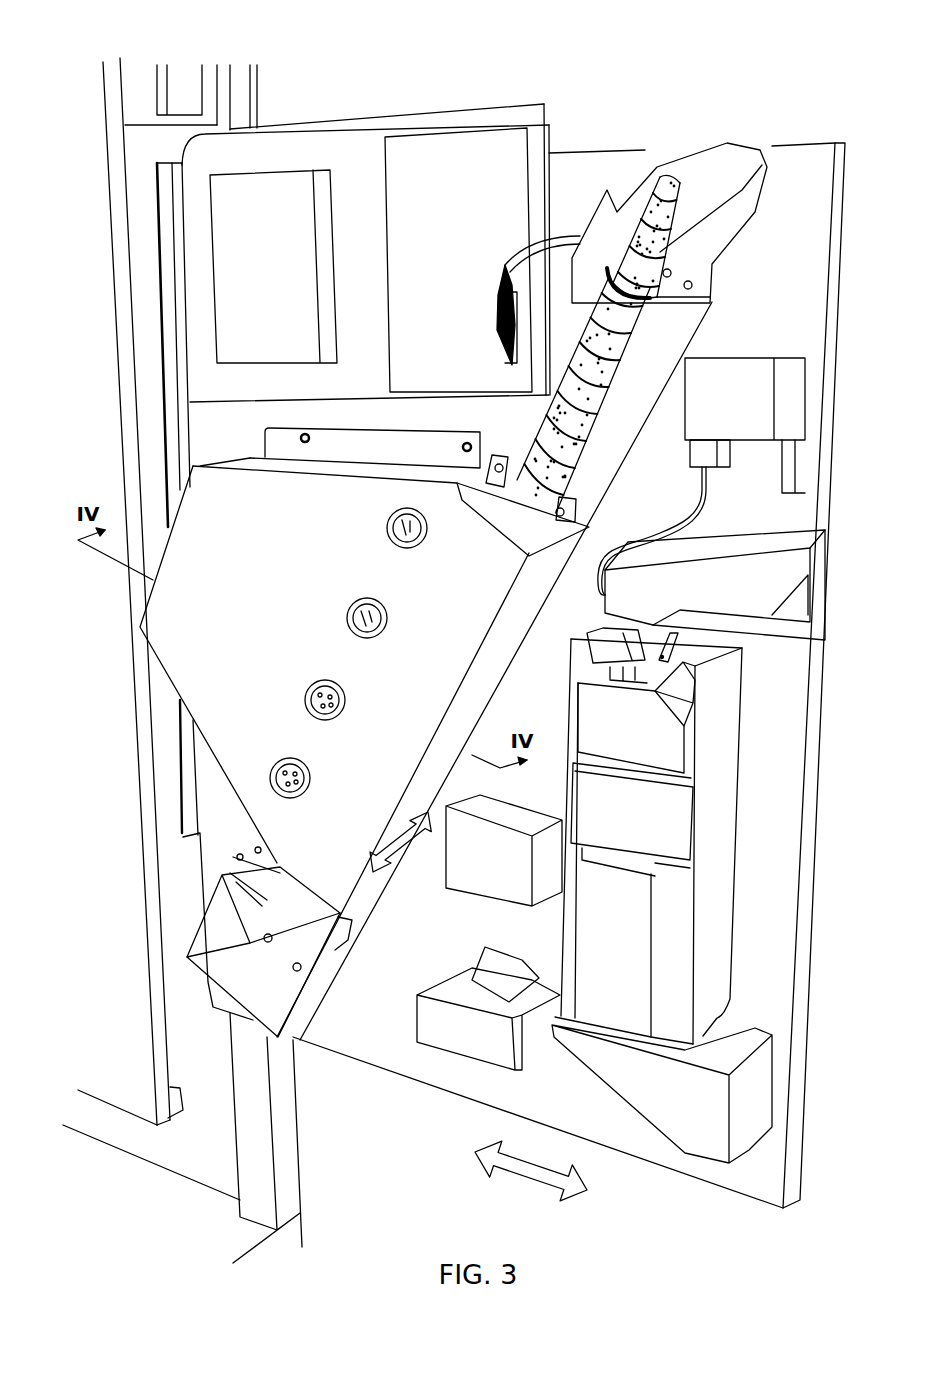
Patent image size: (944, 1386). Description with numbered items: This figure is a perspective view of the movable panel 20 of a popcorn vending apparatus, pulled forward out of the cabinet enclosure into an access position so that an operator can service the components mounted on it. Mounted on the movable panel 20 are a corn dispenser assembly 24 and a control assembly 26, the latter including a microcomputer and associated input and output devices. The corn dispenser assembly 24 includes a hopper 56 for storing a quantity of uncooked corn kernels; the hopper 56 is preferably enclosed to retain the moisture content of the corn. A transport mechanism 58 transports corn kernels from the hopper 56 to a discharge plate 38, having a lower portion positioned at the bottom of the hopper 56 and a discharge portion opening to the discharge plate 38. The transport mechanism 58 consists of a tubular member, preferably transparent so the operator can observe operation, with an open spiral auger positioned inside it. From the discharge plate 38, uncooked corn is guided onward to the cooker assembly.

The movable panel 20 is at (542, 101).
The corn dispenser assembly 24 is at (662, 168).
The control assembly 26 is at (395, 133).
The discharge plate 38 is at (732, 163).
The hopper 56 is at (232, 790).
The transport mechanism 58 is at (609, 478).